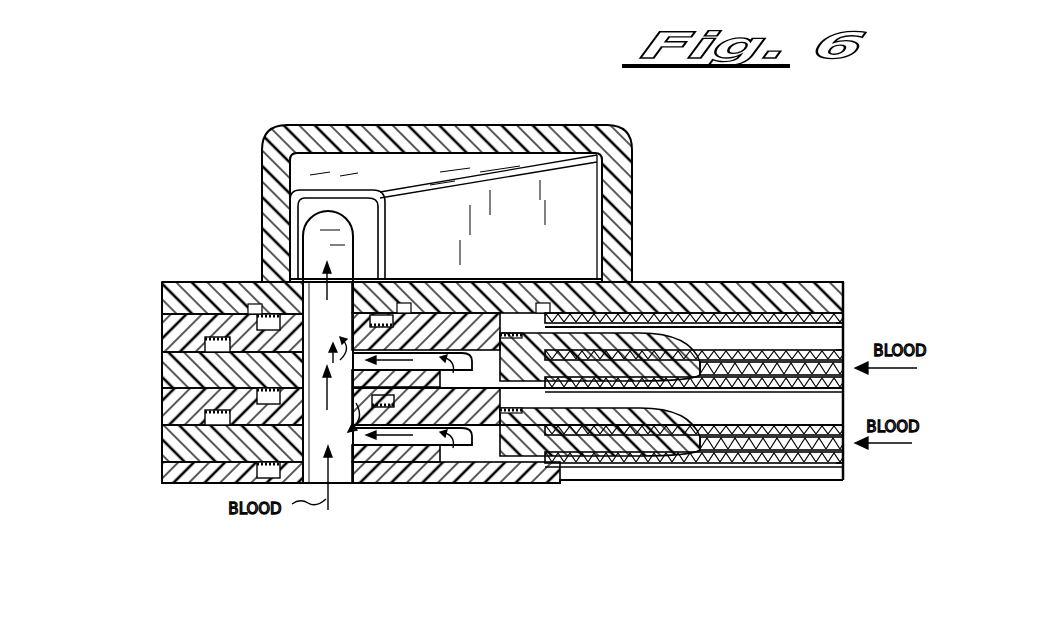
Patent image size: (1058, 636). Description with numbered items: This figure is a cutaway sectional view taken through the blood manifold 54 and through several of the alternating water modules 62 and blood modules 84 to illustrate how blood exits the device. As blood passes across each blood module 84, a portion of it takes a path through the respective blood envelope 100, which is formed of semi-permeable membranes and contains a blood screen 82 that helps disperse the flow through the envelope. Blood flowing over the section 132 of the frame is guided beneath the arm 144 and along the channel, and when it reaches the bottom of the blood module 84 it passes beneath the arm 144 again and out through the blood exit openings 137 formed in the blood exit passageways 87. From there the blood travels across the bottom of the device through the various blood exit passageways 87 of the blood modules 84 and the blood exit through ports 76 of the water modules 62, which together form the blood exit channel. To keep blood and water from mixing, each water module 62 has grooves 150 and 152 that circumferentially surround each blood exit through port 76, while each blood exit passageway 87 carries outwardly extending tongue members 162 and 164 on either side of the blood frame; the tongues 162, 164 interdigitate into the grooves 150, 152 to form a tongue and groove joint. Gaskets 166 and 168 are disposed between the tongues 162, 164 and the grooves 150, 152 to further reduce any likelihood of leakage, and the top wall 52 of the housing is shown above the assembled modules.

The housing top wall 52 is at (787, 292).
The blood manifold 54 is at (630, 146).
The water module 62 is at (175, 336).
The blood exit through port 76 is at (378, 312).
The blood screen 82 is at (847, 428).
The blood module 84 is at (175, 372).
The blood exit passageway 87 is at (333, 484).
The blood envelope 100 is at (752, 452).
The section of the frame 132 is at (419, 482).
The blood exit openings 137 is at (477, 483).
The arm 144 is at (597, 440).
The groove 150 is at (240, 312).
The groove 152 is at (505, 333).
The tongue member 162 is at (531, 300).
The tongue member 164 is at (205, 416).
The gasket 166 is at (216, 312).
The gasket 168 is at (256, 306).